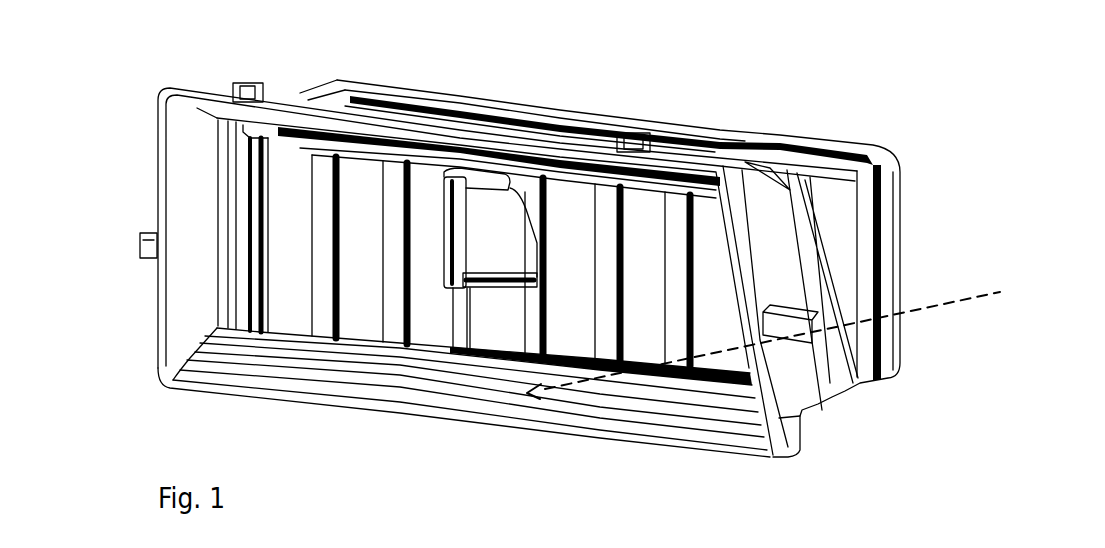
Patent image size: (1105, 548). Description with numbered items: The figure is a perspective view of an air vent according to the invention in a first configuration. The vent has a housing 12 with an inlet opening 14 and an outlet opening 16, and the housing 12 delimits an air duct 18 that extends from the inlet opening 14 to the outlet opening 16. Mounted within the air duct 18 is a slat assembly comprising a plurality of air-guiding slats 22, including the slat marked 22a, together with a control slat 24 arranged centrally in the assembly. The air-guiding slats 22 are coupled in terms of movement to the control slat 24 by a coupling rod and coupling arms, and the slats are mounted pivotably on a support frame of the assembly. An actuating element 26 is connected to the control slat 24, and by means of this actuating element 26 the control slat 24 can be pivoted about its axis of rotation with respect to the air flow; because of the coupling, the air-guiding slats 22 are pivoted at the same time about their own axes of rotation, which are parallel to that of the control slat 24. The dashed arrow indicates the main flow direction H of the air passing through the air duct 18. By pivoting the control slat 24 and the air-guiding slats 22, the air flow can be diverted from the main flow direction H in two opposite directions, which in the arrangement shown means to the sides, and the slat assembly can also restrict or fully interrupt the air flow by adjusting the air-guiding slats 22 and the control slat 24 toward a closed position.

The housing 12 is at (835, 160).
The inlet opening 14 is at (918, 248).
The outlet opening 16 is at (190, 292).
The air duct 18 is at (207, 239).
The air-guiding slats 22 is at (430, 197).
The fixed vane 22a is at (288, 166).
The control slat 24 is at (500, 332).
The actuating element 26 is at (467, 193).
The main flow direction H is at (780, 338).